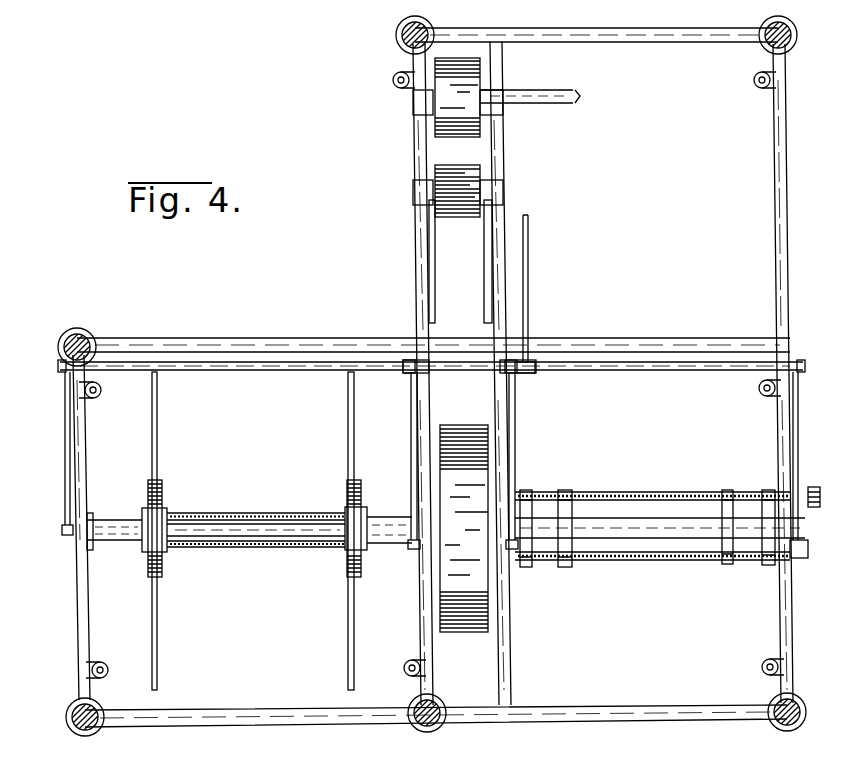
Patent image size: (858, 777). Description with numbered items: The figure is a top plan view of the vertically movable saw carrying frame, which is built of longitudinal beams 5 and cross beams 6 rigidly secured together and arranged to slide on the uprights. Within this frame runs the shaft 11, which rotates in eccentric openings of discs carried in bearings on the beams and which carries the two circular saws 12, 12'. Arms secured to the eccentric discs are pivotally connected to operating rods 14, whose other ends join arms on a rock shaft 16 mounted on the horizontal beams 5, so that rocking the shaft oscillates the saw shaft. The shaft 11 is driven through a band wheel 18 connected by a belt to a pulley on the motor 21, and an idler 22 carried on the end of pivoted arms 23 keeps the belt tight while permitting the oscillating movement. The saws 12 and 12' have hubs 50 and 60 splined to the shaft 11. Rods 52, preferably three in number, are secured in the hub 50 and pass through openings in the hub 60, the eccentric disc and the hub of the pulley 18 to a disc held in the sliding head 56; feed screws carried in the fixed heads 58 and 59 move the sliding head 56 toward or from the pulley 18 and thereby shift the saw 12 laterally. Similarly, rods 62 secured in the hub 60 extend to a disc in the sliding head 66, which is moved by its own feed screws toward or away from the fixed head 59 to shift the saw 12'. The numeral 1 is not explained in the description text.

The corner pivot post 1 is at (408, 31).
The longitudinal beams 5 is at (78, 562).
The cross beams 6 is at (668, 44).
The shaft 11 is at (235, 527).
The circular saw 12 is at (182, 531).
The circular saw 12' is at (327, 531).
The operating rods 14 is at (67, 428).
The rock shaft 16 is at (603, 370).
The band wheel 18 is at (468, 620).
The motor 21 is at (455, 97).
The idler 22 is at (470, 180).
The arms 23 is at (432, 226).
The hub 50 is at (162, 546).
The rods 52 is at (200, 517).
The sliding head 56 is at (562, 568).
The fixed head 58 is at (527, 568).
The fixed head 59 is at (772, 567).
The hub 60 is at (347, 540).
The rods 62 is at (402, 547).
The sliding head 66 is at (728, 566).